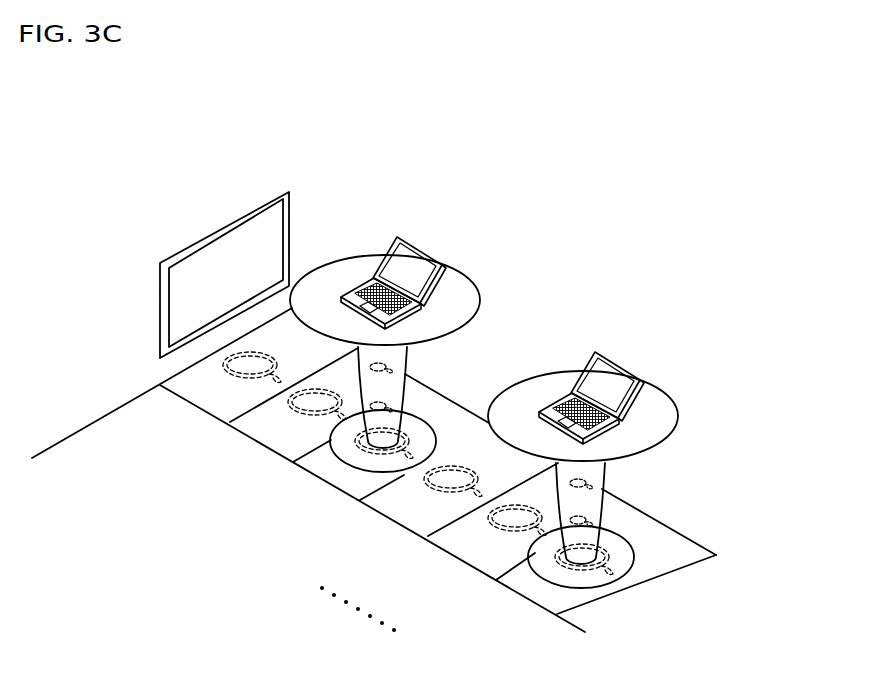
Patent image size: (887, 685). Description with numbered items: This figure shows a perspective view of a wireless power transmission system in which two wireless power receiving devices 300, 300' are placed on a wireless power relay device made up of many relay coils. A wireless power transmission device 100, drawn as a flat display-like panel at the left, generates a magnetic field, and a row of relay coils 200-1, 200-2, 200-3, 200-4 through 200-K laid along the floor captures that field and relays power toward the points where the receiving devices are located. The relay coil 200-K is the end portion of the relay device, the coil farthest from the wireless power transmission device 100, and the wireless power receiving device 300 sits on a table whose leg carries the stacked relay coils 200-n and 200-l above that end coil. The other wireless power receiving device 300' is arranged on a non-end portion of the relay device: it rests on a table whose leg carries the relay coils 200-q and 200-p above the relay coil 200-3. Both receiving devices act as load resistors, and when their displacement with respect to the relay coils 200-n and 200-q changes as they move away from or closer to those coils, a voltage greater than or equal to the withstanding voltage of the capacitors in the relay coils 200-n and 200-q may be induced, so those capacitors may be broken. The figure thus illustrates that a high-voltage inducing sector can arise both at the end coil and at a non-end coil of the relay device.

The wireless power transmission device 100 is at (292, 238).
The wireless power receiving device 300' is at (443, 240).
The wireless power receiving device 300 is at (637, 355).
The relay coil 200-1 is at (232, 378).
The relay coil 200-2 is at (302, 412).
The relay coil 200-3 is at (365, 447).
The relay coil 200-4 is at (432, 489).
The relay coil 200-K is at (562, 558).
The relay coil 200-q is at (395, 362).
The relay coil 200-p is at (395, 400).
The relay coil 200-n is at (592, 483).
The relay coil 200-l is at (592, 520).